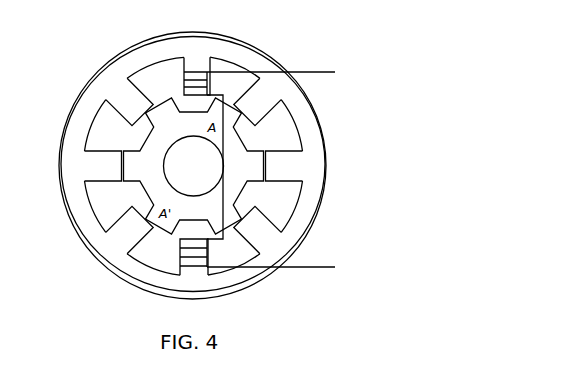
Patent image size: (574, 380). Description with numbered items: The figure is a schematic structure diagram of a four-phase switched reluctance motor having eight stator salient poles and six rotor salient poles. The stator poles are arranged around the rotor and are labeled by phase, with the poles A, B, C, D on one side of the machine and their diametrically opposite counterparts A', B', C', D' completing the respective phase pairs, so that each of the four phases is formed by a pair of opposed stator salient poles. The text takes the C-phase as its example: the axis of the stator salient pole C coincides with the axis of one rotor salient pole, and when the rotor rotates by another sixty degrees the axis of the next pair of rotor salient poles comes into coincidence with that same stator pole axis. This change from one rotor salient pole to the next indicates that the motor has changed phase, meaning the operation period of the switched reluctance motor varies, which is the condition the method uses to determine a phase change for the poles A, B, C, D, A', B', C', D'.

The phase A stator pole with coil A is at (259, 72).
The phase B stator pole B is at (259, 100).
The C-phase stator salient pole C is at (292, 166).
The phase D stator pole D is at (257, 237).
The phase A' stator pole with coil A' is at (257, 267).
The phase B' stator pole B' is at (127, 234).
The phase C' stator pole C' is at (91, 166).
The phase D' stator pole D' is at (125, 100).